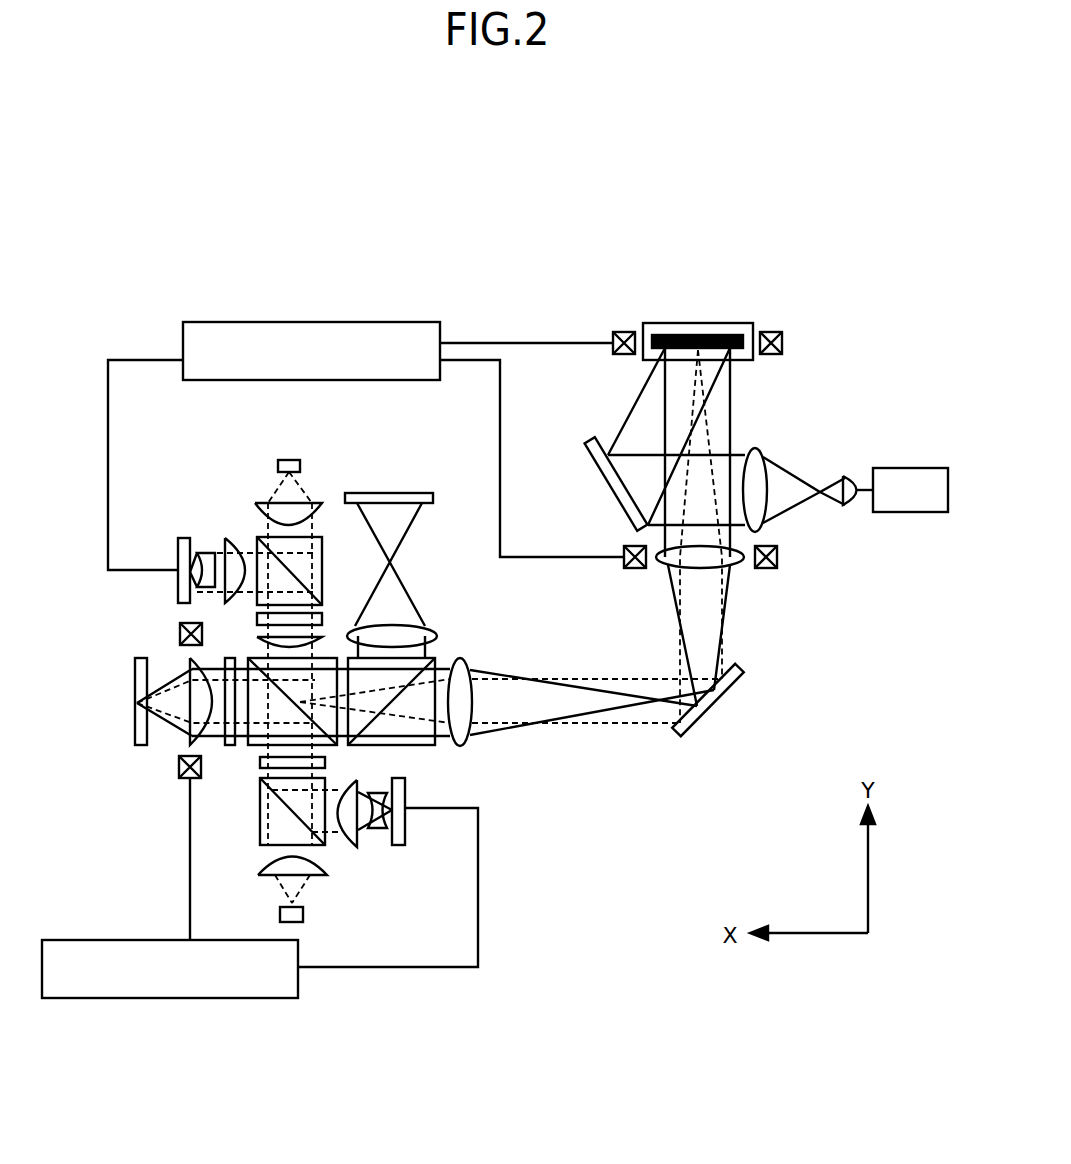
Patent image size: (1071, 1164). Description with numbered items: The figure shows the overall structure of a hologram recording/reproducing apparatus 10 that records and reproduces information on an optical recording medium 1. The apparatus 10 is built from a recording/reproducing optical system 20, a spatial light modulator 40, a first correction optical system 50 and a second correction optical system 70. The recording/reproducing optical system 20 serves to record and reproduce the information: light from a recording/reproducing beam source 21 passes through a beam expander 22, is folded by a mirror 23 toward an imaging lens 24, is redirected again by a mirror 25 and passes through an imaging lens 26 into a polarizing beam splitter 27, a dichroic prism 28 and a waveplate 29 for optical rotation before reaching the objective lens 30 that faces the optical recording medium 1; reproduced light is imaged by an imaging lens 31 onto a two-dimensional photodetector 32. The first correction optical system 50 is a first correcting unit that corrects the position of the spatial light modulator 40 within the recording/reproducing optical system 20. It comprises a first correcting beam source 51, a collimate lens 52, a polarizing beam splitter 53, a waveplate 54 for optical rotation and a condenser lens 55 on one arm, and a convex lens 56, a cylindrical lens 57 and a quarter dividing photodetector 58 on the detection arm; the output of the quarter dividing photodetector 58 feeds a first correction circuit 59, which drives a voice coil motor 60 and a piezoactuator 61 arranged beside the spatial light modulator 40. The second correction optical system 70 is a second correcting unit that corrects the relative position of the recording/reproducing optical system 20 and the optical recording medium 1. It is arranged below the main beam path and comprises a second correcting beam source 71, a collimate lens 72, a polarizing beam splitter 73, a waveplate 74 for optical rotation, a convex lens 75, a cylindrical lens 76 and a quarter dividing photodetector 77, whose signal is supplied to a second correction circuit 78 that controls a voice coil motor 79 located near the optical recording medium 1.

The optical recording medium 1 is at (140, 657).
The hologram recording/reproducing apparatus 10 is at (827, 314).
The recording/reproducing optical system 20 is at (858, 395).
The recording/reproducing beam source 21 is at (905, 467).
The beam expander 22 is at (743, 432).
The mirror 23 is at (608, 488).
The imaging lens 24 is at (740, 565).
The mirror 25 is at (722, 708).
The imaging lens 26 is at (472, 660).
The polarizing beam splitter 27 is at (438, 660).
The dichroic prism 28 is at (231, 748).
The waveplate for optical rotation 29 is at (198, 748).
The objective lens 30 is at (145, 748).
The imaging lens 31 is at (437, 633).
The two-dimensional photodetector 32 is at (412, 493).
The spatial light modulator 40 is at (722, 323).
The first correction optical system 50 is at (186, 449).
The first correcting beam source 51 is at (288, 460).
The collimate lens 52 is at (258, 504).
The polarizing beam splitter 53 is at (258, 538).
The waveplate for optical rotation 54 is at (323, 615).
The condenser lens 55 is at (258, 642).
The convex lens 56 is at (228, 538).
The cylindrical lens 57 is at (200, 553).
The quarter dividing photodetector 58 is at (178, 560).
The first correction circuit 59 is at (380, 322).
The voice coil motor 60 is at (780, 557).
The piezoactuator 61 is at (624, 332).
The second correction optical system 70 is at (528, 878).
The second correcting beam source 71 is at (303, 922).
The collimate lens 72 is at (327, 870).
The polarizing beam splitter 73 is at (262, 845).
The waveplate for optical rotation 74 is at (325, 762).
The convex lens 75 is at (356, 847).
The cylindrical lens 76 is at (375, 830).
The quarter dividing photodetector 77 is at (407, 792).
The second correction circuit 78 is at (130, 940).
The voice coil motor 79 is at (182, 778).